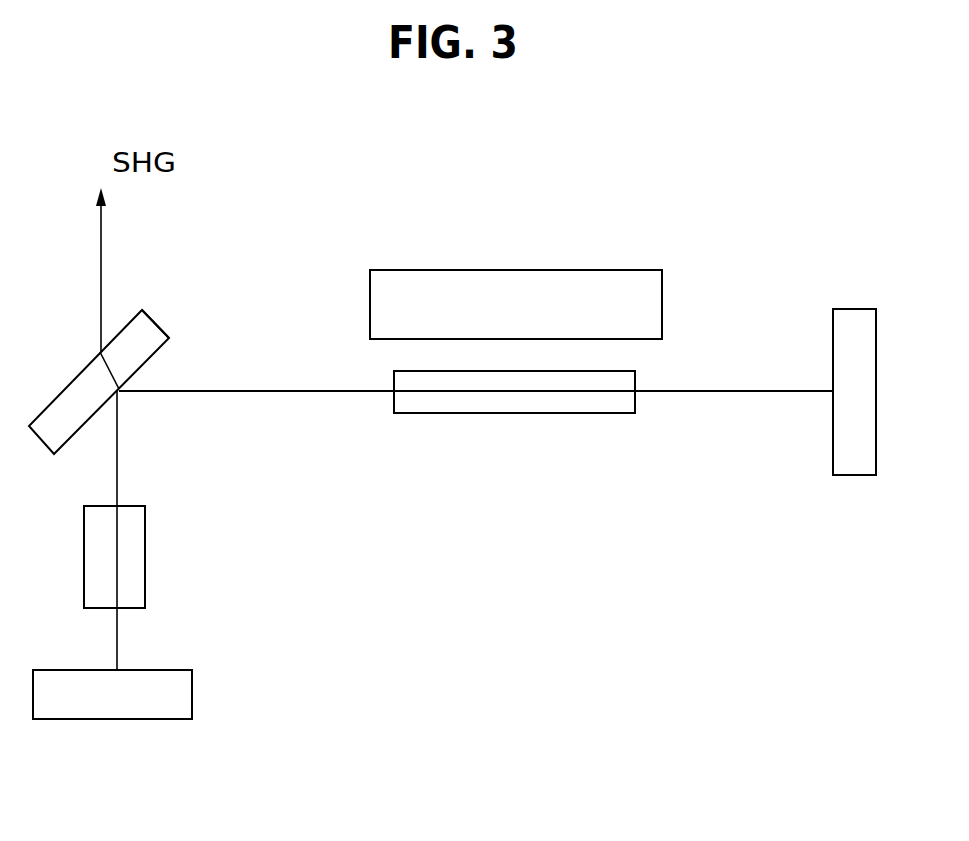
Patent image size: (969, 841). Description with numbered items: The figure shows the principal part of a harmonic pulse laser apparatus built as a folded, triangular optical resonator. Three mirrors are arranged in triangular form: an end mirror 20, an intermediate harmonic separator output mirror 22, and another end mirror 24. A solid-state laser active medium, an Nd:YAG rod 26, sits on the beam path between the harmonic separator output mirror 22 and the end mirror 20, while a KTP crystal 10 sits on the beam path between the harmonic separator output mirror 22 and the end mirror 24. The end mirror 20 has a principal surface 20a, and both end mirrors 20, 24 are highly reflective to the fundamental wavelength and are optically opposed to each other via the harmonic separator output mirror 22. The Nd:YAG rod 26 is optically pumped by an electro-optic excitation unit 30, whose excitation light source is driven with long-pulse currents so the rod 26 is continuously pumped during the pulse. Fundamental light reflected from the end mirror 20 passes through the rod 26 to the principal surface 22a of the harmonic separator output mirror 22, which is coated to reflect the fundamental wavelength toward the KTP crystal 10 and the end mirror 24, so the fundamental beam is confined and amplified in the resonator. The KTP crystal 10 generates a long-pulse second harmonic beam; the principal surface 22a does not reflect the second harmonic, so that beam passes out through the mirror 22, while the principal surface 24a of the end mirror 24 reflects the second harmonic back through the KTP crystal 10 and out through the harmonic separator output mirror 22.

The KTP crystal 10 is at (135, 543).
The end mirror 20 is at (848, 315).
The principal surface of the end mirror 20a is at (833, 418).
The harmonic separator output mirror 22 is at (153, 312).
The principal surface of the harmonic separator output mirror 22a is at (157, 353).
The end mirror 24 is at (185, 697).
The principal surface of the end mirror 24a is at (162, 668).
The Nd:YAG rod 26 is at (515, 405).
The electro-optic excitation unit 30 is at (543, 270).